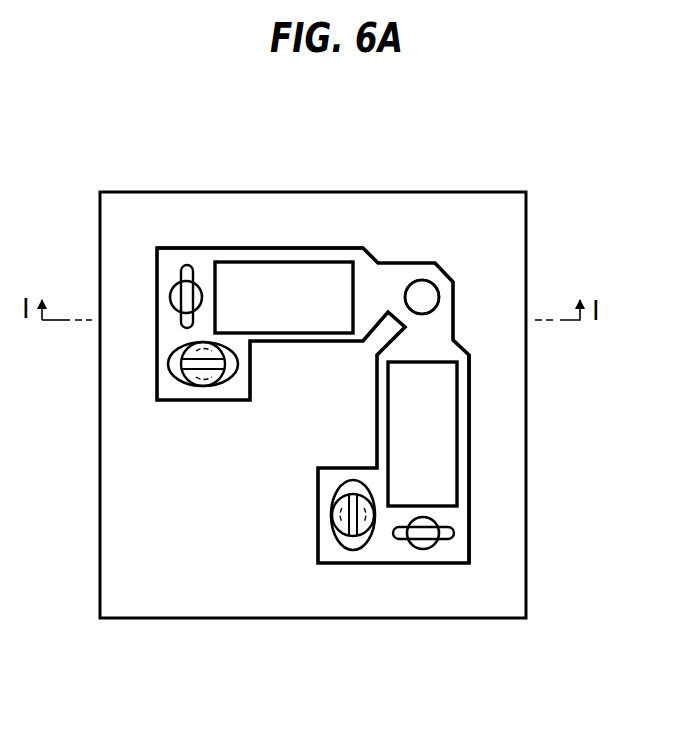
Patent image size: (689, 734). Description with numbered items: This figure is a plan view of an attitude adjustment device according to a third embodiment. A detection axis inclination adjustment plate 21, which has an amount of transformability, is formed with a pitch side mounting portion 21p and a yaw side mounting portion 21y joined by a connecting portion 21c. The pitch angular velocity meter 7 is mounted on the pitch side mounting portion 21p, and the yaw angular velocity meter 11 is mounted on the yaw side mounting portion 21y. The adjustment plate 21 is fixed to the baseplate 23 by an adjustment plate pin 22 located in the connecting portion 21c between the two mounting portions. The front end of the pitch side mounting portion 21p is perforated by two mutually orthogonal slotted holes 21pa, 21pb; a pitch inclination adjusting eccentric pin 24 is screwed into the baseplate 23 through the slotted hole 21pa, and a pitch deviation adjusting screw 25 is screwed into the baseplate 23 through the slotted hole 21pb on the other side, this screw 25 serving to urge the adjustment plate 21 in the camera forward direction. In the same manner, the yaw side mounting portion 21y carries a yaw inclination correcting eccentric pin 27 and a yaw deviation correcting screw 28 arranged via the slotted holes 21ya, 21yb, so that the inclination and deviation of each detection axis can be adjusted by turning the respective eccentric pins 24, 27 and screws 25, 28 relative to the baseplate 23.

The pitch angular velocity meter 7 is at (447, 410).
The yaw angular velocity meter 11 is at (252, 280).
The detection axis inclination adjustment plate 21 is at (458, 319).
The connecting portion 21c is at (412, 263).
The pitch side mounting portion 21p is at (470, 465).
The slotted hole 21pa is at (333, 563).
The slotted hole 21pb is at (453, 540).
The yaw side mounting portion 21y is at (320, 248).
The slotted hole 21ya is at (168, 364).
The slotted hole 21yb is at (191, 268).
The adjustment plate pin 22 is at (435, 285).
The baseplate 23 is at (527, 582).
The pitch inclination adjusting eccentric pin 24 is at (333, 515).
The pitch deviation adjusting screw 25 is at (423, 549).
The yaw inclination correcting eccentric pin 27 is at (205, 387).
The yaw deviation correcting screw 28 is at (170, 297).